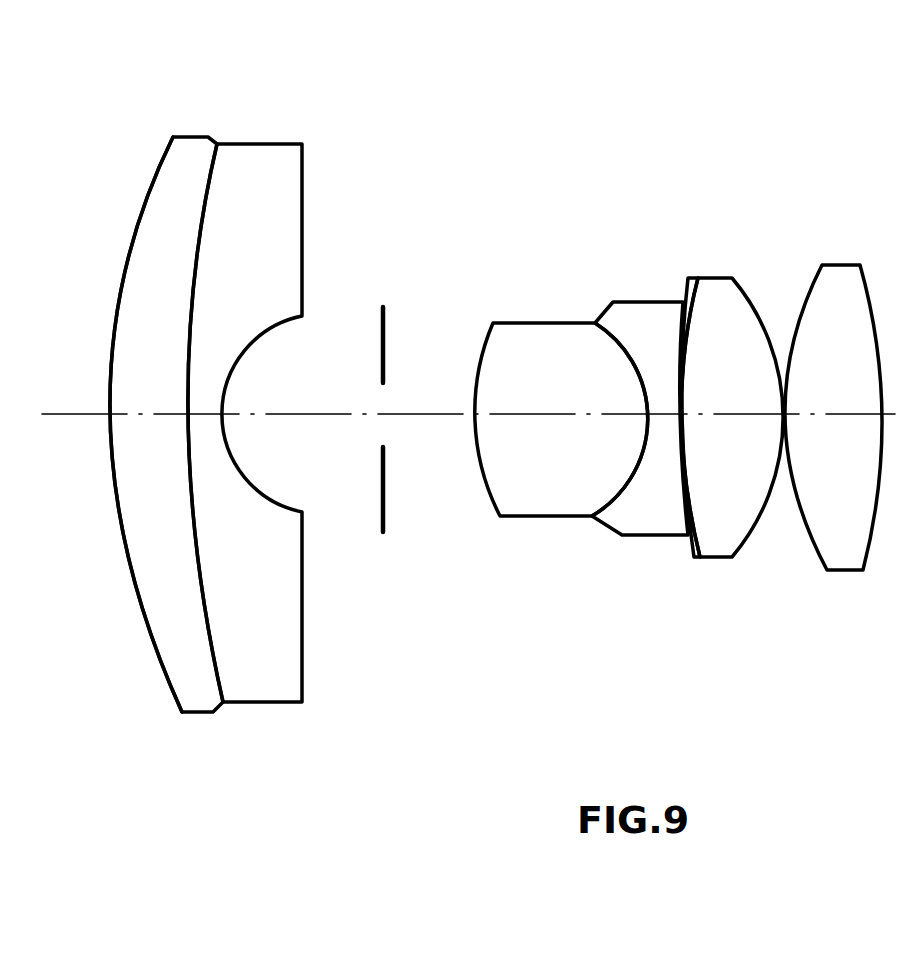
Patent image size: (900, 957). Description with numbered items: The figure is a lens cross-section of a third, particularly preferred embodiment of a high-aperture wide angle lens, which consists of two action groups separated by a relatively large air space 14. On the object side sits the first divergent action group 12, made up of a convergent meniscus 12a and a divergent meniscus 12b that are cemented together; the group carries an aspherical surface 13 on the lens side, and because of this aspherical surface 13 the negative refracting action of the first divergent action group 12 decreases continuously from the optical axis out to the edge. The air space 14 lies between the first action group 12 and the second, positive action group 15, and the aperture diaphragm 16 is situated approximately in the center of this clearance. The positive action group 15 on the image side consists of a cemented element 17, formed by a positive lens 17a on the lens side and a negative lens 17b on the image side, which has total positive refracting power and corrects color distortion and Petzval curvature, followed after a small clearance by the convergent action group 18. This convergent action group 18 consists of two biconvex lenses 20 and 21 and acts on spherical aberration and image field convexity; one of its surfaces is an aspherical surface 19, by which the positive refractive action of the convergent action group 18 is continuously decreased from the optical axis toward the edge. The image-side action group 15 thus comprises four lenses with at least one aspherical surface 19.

The first divergent action group 12 is at (201, 430).
The convergent meniscus 12a is at (192, 137).
The divergent meniscus 12b is at (263, 144).
The aspherical surface 13 is at (140, 187).
The air space 14 is at (332, 373).
The positive action group 15 is at (675, 448).
The aperture diaphragm 16 is at (387, 327).
The cemented element 17 is at (580, 417).
The positive lens 17a is at (547, 323).
The negative lens 17b is at (642, 302).
The convergent action group 18 is at (783, 405).
The aspherical surface 19 is at (708, 278).
The biconvex lens 20 is at (732, 278).
The biconvex lens 21 is at (843, 265).